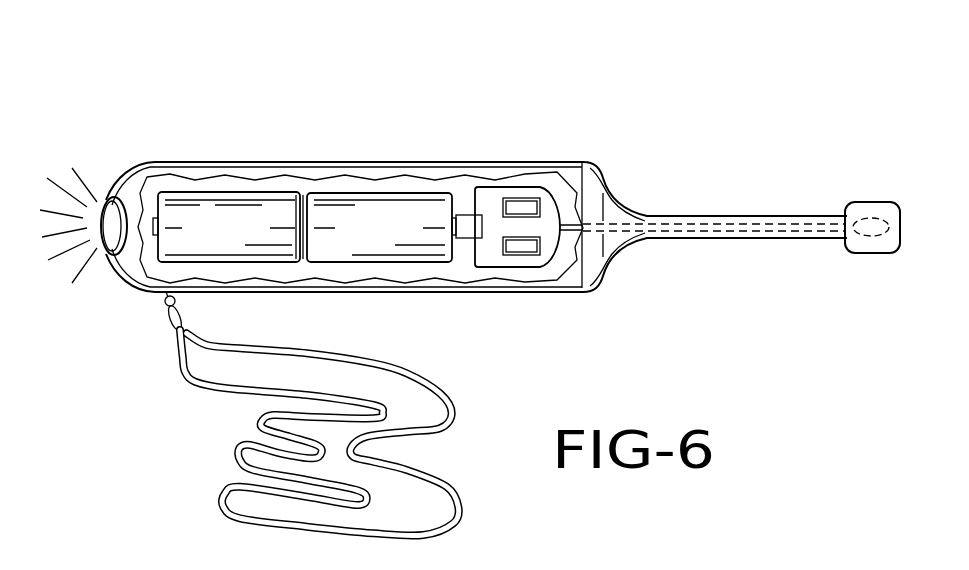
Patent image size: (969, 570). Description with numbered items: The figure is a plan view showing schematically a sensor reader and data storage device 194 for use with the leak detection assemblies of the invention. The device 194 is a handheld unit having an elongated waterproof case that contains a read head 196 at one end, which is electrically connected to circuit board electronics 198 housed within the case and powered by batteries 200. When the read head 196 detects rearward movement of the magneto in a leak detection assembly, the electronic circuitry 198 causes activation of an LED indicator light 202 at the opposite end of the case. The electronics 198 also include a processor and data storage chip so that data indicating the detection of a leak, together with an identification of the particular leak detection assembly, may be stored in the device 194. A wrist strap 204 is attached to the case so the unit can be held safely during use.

The sensor reader and data storage device 194 is at (689, 142).
The read head 196 is at (877, 210).
The circuit board electronics 198 is at (523, 196).
The batteries 200 is at (347, 205).
The LED indicator light 202 is at (110, 215).
The wrist strap 204 is at (380, 370).